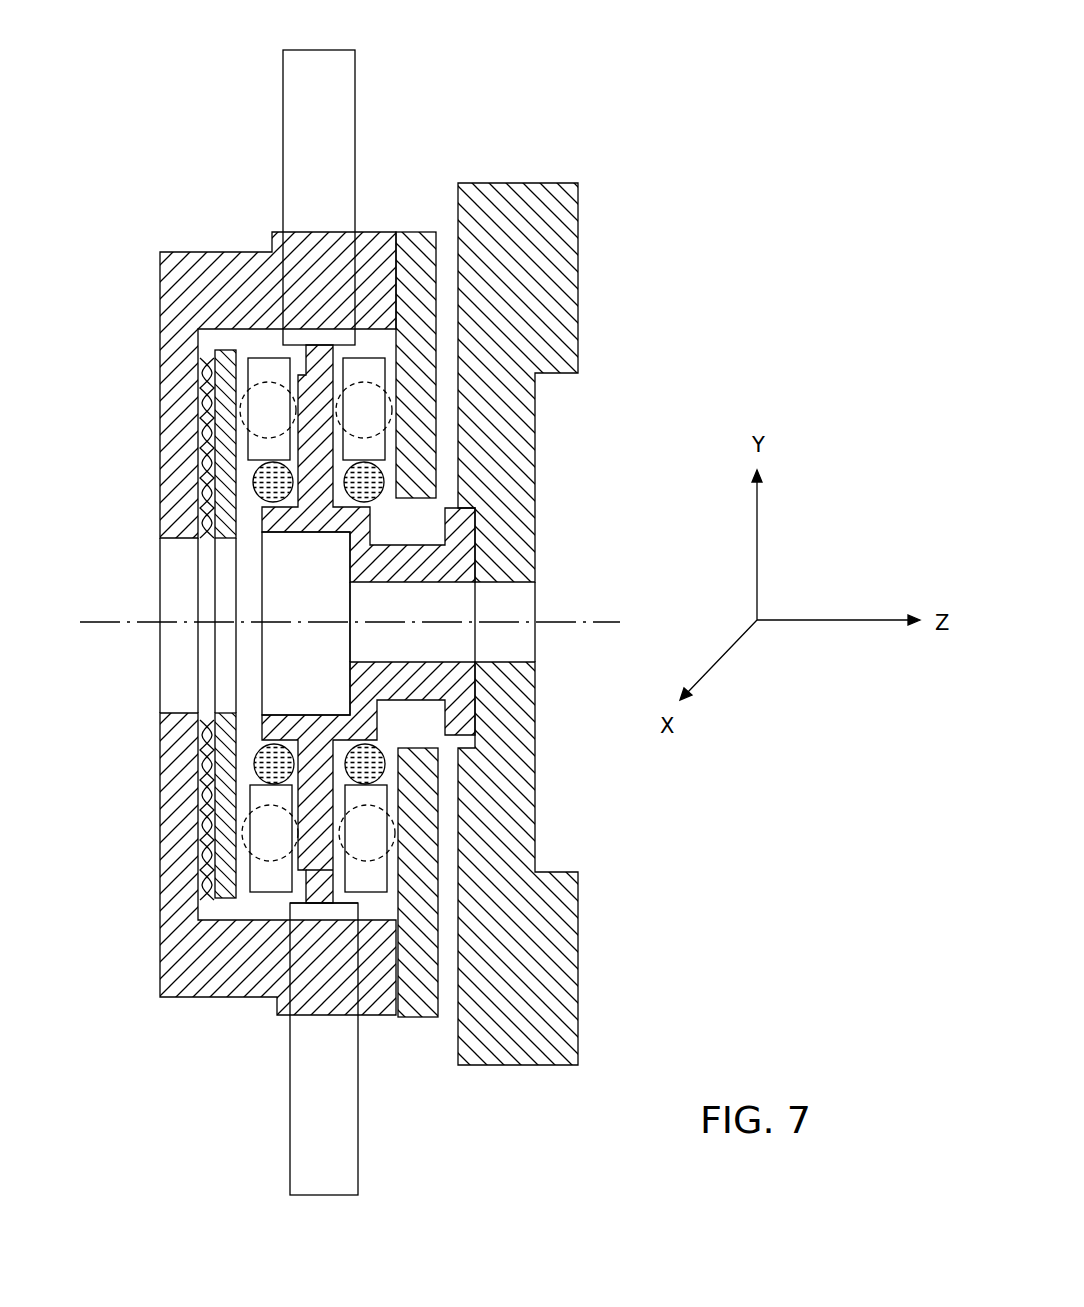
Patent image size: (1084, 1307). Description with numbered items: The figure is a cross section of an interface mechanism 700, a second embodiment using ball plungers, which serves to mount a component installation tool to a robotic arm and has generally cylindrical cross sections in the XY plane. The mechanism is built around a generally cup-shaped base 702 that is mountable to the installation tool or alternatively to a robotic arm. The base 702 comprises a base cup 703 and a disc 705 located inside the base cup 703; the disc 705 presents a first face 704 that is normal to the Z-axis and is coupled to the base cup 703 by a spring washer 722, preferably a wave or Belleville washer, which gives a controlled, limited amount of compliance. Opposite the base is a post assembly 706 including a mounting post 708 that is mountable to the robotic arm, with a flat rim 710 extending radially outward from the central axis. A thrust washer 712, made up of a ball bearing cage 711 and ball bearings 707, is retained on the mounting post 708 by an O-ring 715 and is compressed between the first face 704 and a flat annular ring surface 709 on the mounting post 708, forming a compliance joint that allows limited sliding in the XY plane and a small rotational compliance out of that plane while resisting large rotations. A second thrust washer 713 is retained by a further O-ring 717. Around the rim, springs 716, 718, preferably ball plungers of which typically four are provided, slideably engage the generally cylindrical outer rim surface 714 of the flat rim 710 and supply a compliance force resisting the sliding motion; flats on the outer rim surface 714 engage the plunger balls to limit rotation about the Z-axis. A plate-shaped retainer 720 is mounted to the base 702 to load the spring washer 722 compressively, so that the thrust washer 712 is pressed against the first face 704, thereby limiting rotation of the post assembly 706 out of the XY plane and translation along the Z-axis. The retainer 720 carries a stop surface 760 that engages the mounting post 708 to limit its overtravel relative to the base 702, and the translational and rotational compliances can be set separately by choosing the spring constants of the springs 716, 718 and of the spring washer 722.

The interface mechanism 700 is at (580, 110).
The base 702 is at (198, 226).
The base cup 703 is at (159, 262).
The first face 704 is at (237, 747).
The disc 705 is at (236, 365).
The post assembly 706 is at (340, 650).
The ball bearings 707 is at (257, 812).
The mounting post 708 is at (437, 662).
The flat annular ring surface 709 is at (300, 815).
The flat rim 710 is at (310, 888).
The ball bearing cage 711 is at (218, 862).
The thrust washer 712 is at (238, 912).
The second thrust washer 713 is at (390, 813).
The outer rim surface 714 is at (300, 370).
The O-ring 715 is at (254, 760).
The spring 716 is at (357, 75).
The O-ring 717 is at (398, 746).
The spring 718 is at (360, 1118).
The retainer 720 is at (407, 231).
The spring washer 722 is at (200, 388).
The stop surface 760 is at (418, 512).